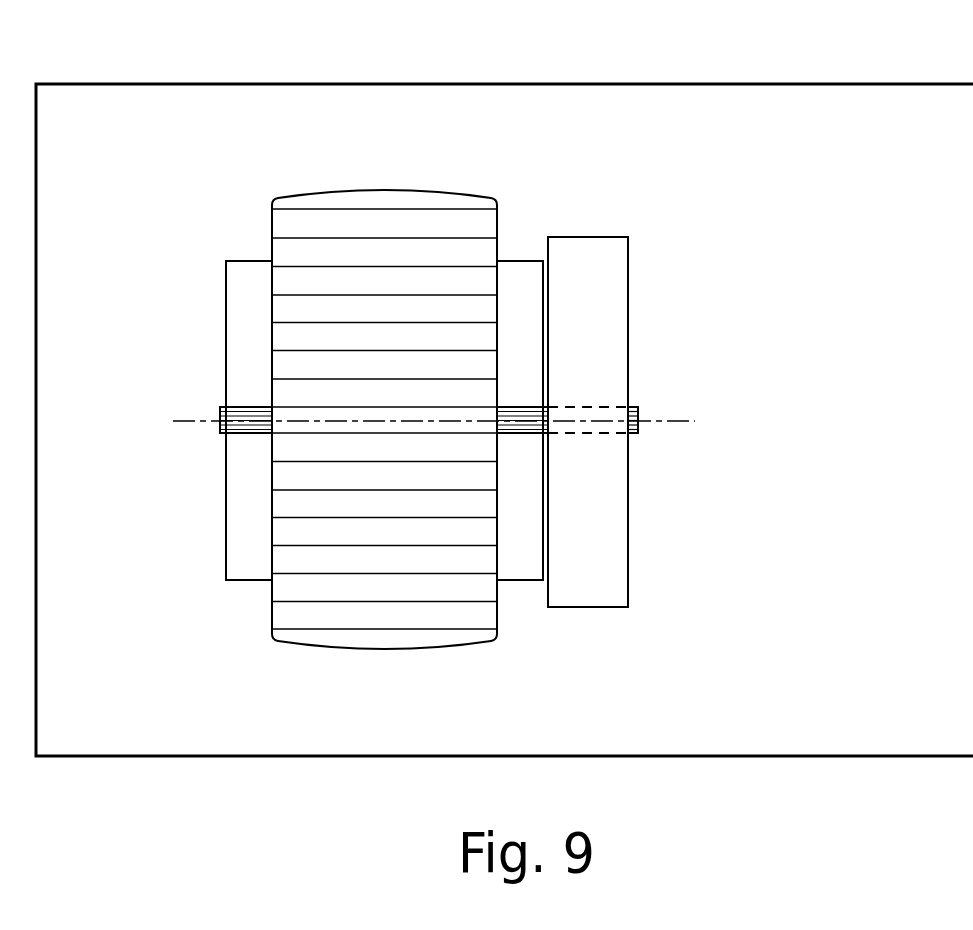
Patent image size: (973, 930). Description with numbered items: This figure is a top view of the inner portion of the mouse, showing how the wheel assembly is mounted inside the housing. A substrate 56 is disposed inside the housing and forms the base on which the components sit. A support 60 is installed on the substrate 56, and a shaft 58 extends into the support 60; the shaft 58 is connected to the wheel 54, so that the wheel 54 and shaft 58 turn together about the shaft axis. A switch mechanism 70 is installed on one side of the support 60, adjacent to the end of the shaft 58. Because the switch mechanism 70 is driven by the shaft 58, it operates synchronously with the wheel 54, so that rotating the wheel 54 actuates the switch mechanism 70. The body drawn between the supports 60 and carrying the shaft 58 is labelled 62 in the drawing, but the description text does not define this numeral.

The wheel 54 is at (429, 334).
The substrate 56 is at (838, 521).
The shaft 58 is at (220, 428).
The support 60 is at (245, 278).
The rotor core 62 is at (405, 502).
The switch mechanism 70 is at (601, 297).